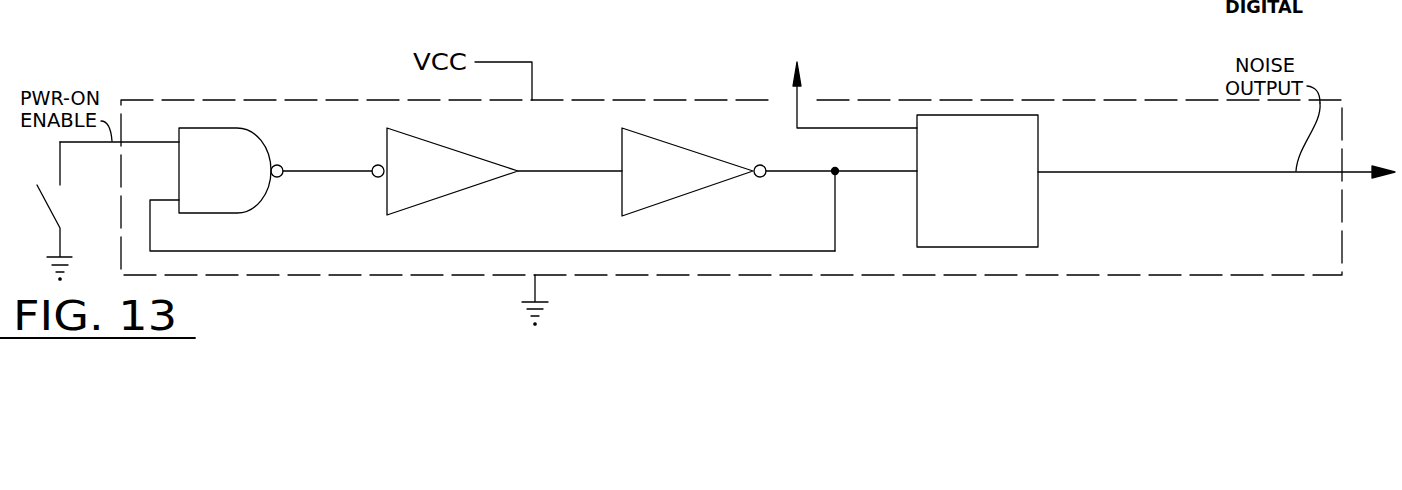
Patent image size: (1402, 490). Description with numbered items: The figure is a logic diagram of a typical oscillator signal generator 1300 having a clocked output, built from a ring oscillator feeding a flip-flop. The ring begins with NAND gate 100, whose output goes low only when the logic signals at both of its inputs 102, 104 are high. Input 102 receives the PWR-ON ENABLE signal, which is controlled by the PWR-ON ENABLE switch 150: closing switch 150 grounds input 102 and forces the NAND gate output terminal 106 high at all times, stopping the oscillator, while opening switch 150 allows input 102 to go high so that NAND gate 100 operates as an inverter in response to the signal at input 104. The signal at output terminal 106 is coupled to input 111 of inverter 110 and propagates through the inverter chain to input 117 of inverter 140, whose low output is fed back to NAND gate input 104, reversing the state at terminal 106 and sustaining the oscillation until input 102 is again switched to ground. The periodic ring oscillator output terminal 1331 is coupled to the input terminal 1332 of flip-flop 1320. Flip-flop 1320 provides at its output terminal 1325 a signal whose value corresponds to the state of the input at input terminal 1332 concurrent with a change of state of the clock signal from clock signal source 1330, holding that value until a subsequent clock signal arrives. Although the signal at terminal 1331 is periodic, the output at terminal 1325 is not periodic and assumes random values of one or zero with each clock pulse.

The NAND gate 100 is at (231, 170).
The input 102 is at (176, 141).
The input 104 is at (161, 202).
The output terminal 106 is at (276, 165).
The inverter 110 is at (452, 171).
The input 111 is at (371, 178).
The input 117 is at (622, 177).
The inverter 140 is at (694, 172).
The PWR-ON ENABLE switch 150 is at (48, 202).
The oscillator signal generator 1300 is at (818, 239).
The flip-flop 1320 is at (1003, 233).
The output terminal 1325 is at (1334, 182).
The clock signal source 1330 is at (859, 93).
The ring oscillator output terminal 1331 is at (767, 166).
The input terminal 1332 is at (917, 173).